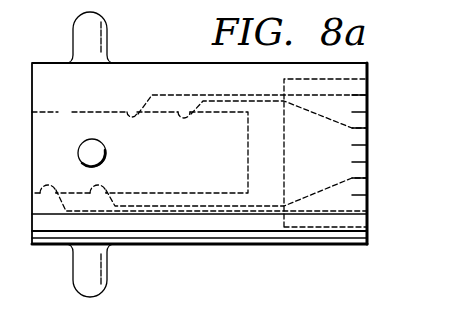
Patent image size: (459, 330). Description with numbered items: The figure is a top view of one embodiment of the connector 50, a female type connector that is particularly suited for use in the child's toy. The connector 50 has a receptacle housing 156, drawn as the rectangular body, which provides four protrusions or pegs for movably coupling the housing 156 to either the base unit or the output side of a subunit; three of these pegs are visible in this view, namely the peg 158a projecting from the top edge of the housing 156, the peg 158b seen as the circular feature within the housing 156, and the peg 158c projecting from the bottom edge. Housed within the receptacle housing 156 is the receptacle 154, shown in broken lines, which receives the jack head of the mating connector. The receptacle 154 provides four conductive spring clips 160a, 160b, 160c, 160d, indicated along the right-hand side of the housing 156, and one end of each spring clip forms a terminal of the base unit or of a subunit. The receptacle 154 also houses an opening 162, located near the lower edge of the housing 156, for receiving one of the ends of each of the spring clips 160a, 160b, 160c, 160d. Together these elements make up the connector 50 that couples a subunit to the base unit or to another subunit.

The connector 50 is at (210, 262).
The receptacle 154 is at (68, 112).
The receptacle housing 156 is at (56, 63).
The peg 158a is at (103, 43).
The peg 158b is at (107, 152).
The peg 158c is at (76, 270).
The spring clip 160a is at (368, 214).
The spring clip 160b is at (368, 178).
The spring clip 160c is at (368, 94).
The spring clip 160d is at (368, 128).
The opening 162 is at (330, 229).